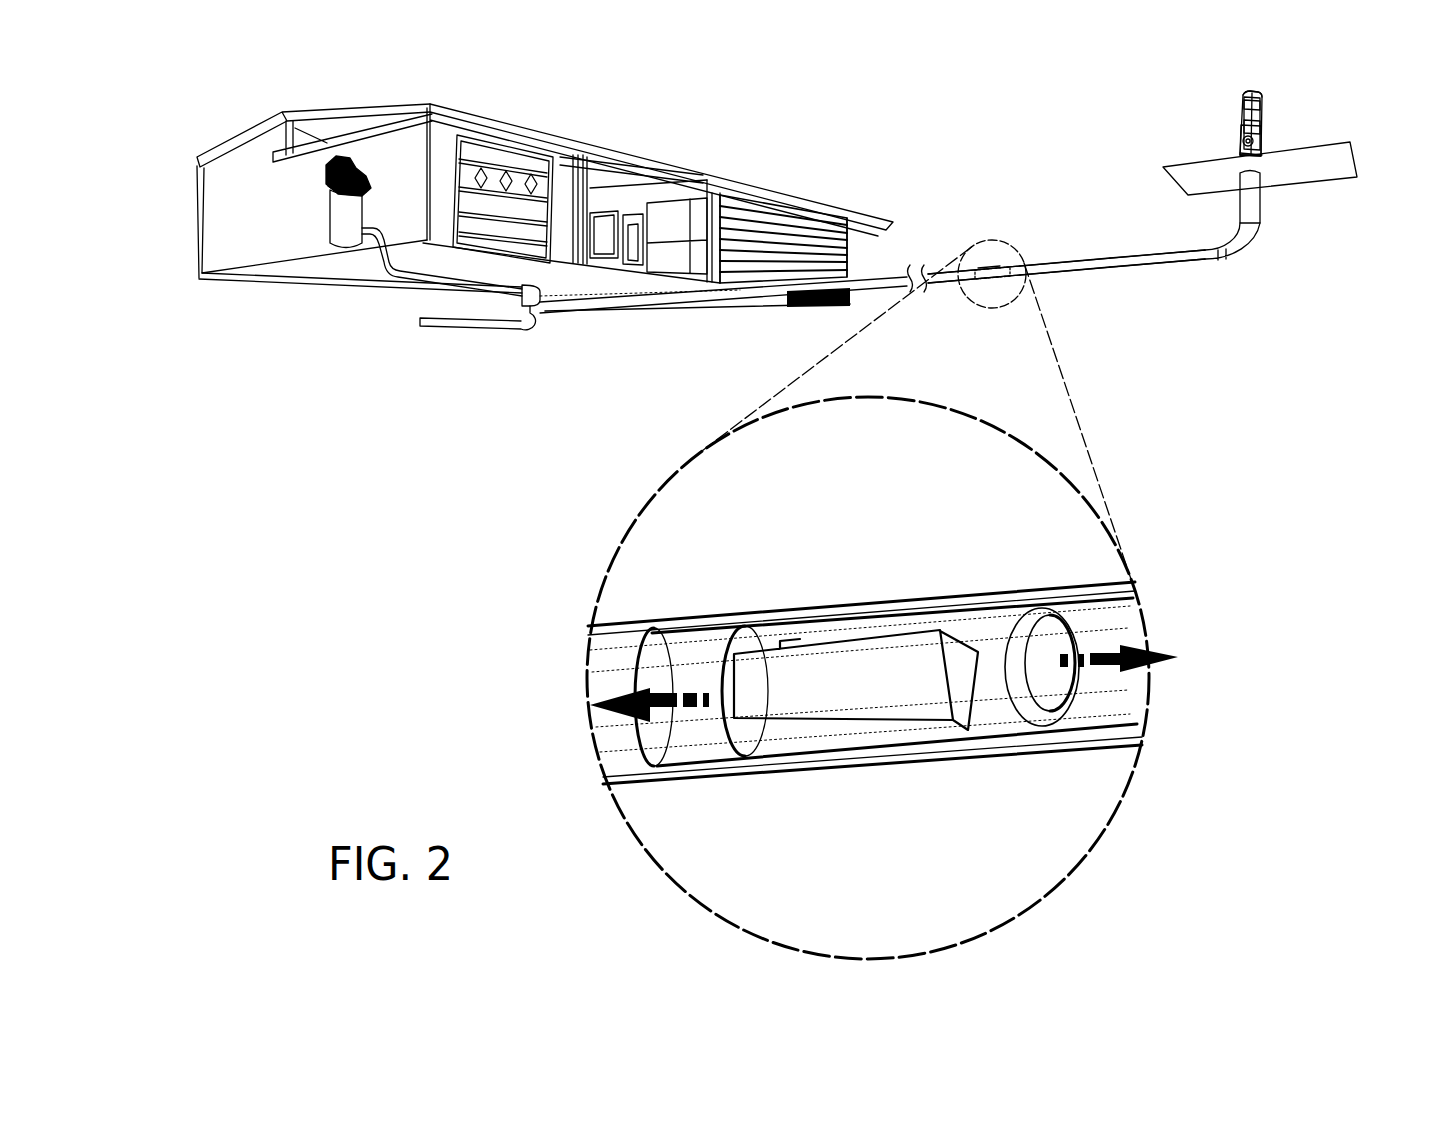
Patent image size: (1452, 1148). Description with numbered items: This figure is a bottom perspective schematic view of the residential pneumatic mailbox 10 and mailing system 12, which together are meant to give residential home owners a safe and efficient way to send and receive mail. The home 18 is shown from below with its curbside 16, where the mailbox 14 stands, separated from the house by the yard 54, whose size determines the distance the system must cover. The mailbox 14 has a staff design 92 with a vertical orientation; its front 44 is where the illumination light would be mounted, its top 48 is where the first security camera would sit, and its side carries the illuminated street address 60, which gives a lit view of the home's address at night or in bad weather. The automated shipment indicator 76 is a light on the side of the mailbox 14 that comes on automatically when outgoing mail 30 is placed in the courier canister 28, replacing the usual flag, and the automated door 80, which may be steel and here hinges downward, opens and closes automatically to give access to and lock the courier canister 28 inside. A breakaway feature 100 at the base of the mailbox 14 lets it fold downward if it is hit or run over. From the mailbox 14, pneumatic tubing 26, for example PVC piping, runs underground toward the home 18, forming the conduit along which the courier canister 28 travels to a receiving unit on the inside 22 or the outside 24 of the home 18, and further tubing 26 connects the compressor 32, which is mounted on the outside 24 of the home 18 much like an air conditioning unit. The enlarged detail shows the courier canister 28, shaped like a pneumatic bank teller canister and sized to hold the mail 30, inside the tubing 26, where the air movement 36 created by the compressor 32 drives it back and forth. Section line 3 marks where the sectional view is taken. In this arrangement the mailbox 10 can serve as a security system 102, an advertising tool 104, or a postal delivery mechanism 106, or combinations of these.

The section line 3 is at (733, 152).
The residential pneumatic mailbox 10 is at (1227, 82).
The mailing system 12 is at (558, 116).
The mailbox 14 is at (1277, 79).
The curbside 16 is at (1347, 85).
The home 18 is at (337, 100).
The inside 22 is at (672, 209).
The outside 24 is at (251, 207).
The pneumatic tubing 26 is at (397, 273).
The courier canister 28 is at (980, 272).
The mail 30 is at (963, 672).
The compressor 32 is at (345, 222).
The air movement 36 is at (615, 680).
The front 44 is at (1264, 137).
The top 48 is at (1248, 92).
The yard 54 is at (961, 210).
The illuminated street address 60 is at (1232, 148).
The automated shipment indicator 76 is at (1236, 126).
The automated door 80 is at (1264, 110).
The staff design 92 is at (1212, 95).
The breakaway feature 100 is at (1253, 170).
The security system 102 is at (1076, 112).
The advertising tool 104 is at (1065, 266).
The postal delivery mechanism 106 is at (1157, 258).